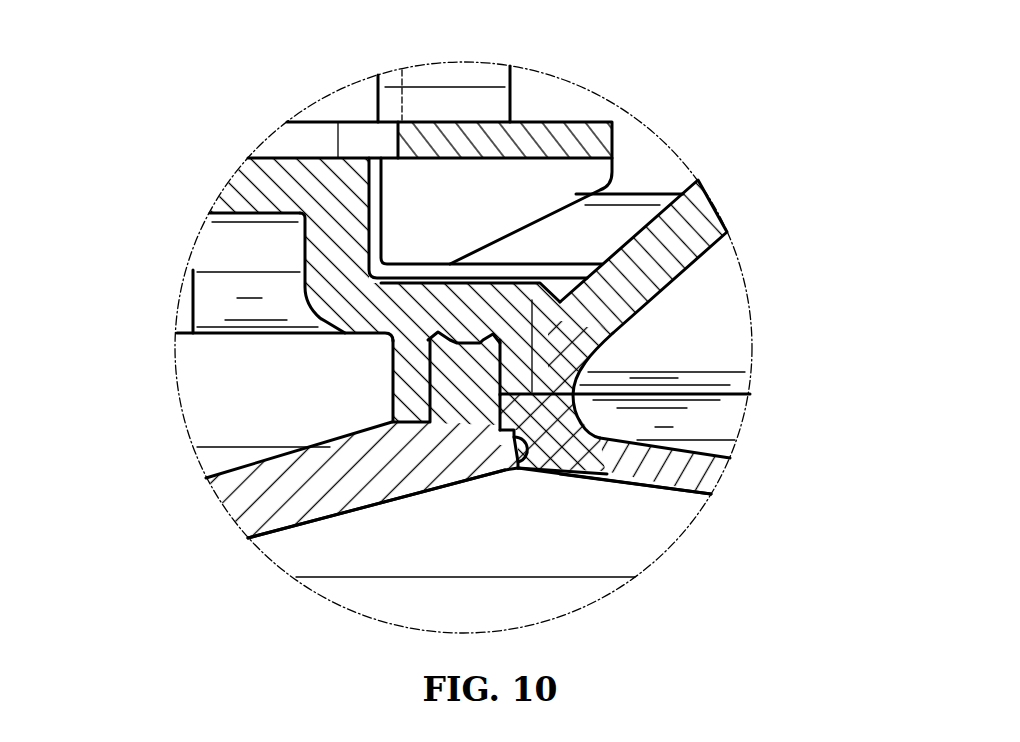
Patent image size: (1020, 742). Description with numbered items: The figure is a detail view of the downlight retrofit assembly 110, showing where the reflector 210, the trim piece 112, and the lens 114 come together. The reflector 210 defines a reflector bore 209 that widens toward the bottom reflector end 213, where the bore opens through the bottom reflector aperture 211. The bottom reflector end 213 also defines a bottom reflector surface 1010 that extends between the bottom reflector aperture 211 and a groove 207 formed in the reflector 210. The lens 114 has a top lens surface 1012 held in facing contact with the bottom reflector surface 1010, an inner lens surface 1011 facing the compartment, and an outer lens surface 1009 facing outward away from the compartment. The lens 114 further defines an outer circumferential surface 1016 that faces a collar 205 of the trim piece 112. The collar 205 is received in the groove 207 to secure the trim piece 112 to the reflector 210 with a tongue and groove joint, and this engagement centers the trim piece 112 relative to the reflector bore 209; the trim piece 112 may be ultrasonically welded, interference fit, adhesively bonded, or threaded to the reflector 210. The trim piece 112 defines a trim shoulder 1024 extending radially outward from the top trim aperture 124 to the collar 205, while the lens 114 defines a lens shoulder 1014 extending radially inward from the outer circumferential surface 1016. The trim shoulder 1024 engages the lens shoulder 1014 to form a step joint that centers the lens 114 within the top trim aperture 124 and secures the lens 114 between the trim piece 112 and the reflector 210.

The downlight retrofit assembly 110 is at (112, 95).
The trim piece 112 is at (250, 510).
The lens 114 is at (705, 480).
The top trim aperture 124 is at (519, 470).
The collar 205 is at (450, 383).
The groove 207 is at (393, 347).
The reflector bore 209 is at (732, 273).
The reflector 210 is at (697, 200).
The bottom reflector aperture 211 is at (578, 390).
The bottom reflector end 213 is at (532, 300).
The outer lens surface 1009 is at (661, 500).
The bottom reflector surface 1010 is at (603, 478).
The inner lens surface 1011 is at (705, 450).
The top lens surface 1012 is at (574, 386).
The lens shoulder 1014 is at (550, 474).
The outer circumferential surface 1016 is at (490, 432).
The trim shoulder 1024 is at (517, 452).